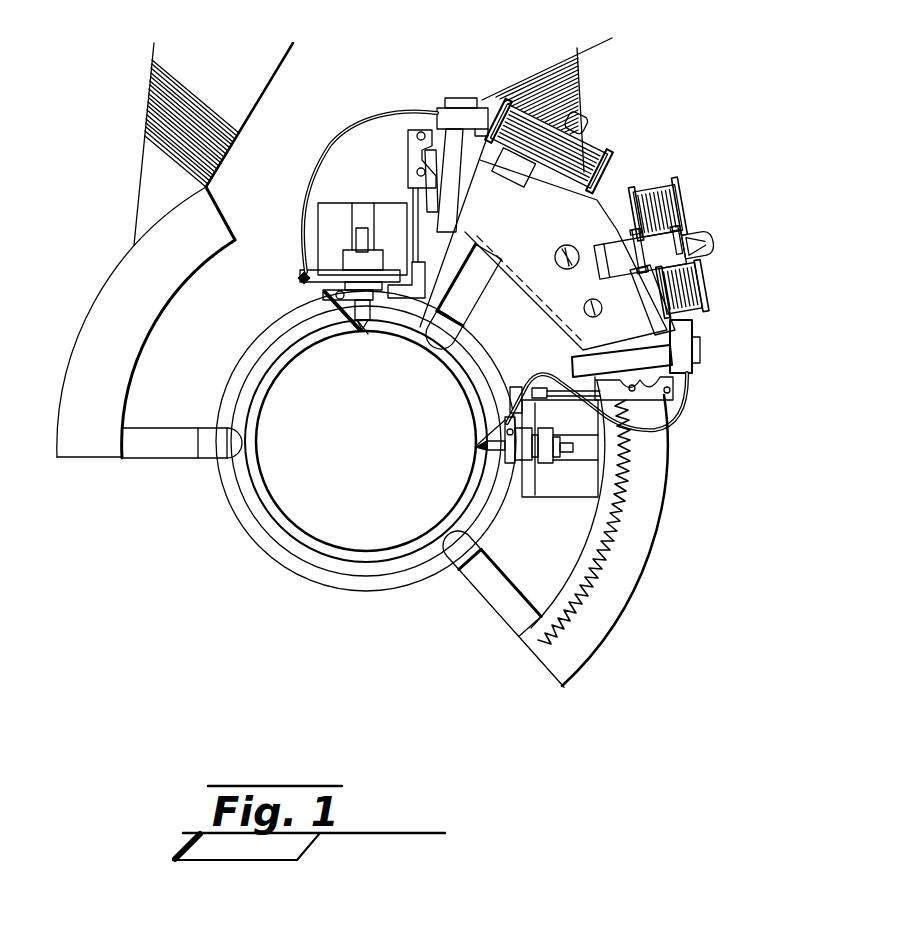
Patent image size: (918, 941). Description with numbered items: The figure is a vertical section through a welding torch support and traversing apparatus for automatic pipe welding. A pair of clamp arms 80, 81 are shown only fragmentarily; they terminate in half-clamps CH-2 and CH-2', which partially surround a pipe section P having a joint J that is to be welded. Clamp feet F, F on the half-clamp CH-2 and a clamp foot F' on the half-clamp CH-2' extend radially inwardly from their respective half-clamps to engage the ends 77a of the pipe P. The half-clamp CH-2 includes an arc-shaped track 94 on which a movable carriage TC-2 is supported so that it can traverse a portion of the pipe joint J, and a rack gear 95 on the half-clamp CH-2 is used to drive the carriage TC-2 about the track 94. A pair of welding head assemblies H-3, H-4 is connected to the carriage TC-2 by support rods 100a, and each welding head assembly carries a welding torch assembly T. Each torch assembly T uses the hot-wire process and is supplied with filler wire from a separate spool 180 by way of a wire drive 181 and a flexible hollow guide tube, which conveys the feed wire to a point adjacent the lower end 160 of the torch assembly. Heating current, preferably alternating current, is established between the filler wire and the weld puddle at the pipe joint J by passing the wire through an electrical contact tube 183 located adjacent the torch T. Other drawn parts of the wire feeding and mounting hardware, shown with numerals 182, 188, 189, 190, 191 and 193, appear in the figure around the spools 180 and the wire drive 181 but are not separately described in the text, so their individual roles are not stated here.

The pipe section P is at (256, 567).
The joint J is at (368, 568).
The ends of the pipe 77a is at (262, 366).
The half-clamp CH-2' is at (124, 322).
The clamp foot F' is at (182, 411).
The clamp arm 81 is at (150, 70).
The clamp arm 80 is at (585, 50).
The movable carriage TC-2 is at (548, 231).
The wire drive 181 is at (448, 100).
The support rods 100a is at (420, 200).
The spool 180 is at (532, 112).
The plunger shaft 191 is at (620, 235).
The collar 189 is at (662, 238).
The tip 193 is at (714, 234).
The flange 190 is at (585, 128).
The armature 188 is at (585, 115).
The welding head assembly H-3 is at (334, 196).
The welding torch assembly T is at (316, 304).
The electrical contact tube 183 is at (300, 277).
The lower end of the torch assembly 160 is at (369, 335).
The cable 182 is at (306, 192).
The clamp feet F is at (504, 465).
The welding head assembly H-4 is at (562, 492).
The half-clamp CH-2 is at (625, 533).
The track 94 is at (656, 470).
The rack gear 95 is at (626, 488).